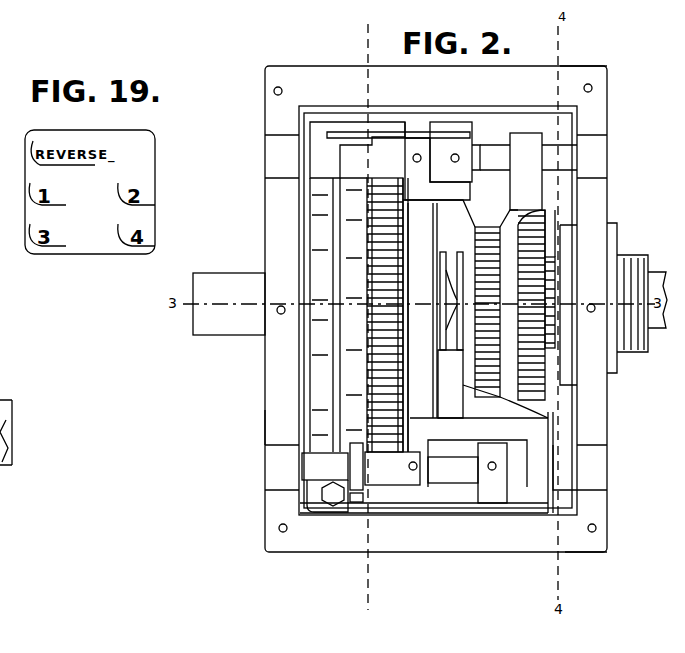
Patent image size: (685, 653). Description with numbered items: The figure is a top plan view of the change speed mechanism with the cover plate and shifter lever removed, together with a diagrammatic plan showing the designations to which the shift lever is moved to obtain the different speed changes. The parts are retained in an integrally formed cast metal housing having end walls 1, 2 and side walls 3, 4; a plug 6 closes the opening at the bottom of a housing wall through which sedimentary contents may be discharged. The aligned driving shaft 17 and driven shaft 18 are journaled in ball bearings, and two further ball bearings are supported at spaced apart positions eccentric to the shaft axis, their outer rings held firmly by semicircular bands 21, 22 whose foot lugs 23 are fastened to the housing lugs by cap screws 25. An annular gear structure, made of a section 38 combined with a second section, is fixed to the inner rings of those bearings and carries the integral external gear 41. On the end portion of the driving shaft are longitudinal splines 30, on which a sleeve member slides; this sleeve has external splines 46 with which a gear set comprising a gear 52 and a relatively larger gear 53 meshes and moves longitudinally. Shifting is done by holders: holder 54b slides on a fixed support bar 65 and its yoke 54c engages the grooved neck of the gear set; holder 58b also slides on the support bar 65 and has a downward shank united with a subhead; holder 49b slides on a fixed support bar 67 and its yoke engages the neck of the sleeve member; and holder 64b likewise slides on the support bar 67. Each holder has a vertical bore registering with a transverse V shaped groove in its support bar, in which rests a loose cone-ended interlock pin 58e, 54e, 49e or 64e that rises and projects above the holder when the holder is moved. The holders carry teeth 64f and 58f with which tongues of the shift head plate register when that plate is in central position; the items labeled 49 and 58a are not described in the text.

The end wall 1 is at (608, 431).
The end wall 2 is at (266, 419).
The side wall 3 is at (573, 553).
The side wall 4 is at (584, 65).
The plug 6 is at (369, 320).
The driving shaft 17 is at (9, 423).
The driven shaft 18 is at (220, 282).
The semicircular band 21 is at (317, 202).
The semicircular band 22 is at (410, 331).
The foot lug 23 is at (312, 495).
The cap screw 25 is at (333, 495).
The longitudinal splines 30 is at (563, 287).
The gear structure section 38 is at (350, 232).
The external gear 41 is at (388, 352).
The external splines 46 is at (550, 348).
The shifter fork 49 is at (460, 333).
The holder 49b is at (500, 430).
The interlock pin 49e is at (409, 468).
The gear 52 is at (478, 233).
The gear 53 is at (540, 233).
The holder 54b is at (527, 175).
The yoke 54c is at (507, 290).
The interlock pin 54e is at (413, 160).
The shift lever arm 58a is at (342, 133).
The holder 58b is at (378, 122).
The interlock pin 58e is at (460, 157).
The tooth 58f is at (417, 123).
The holder 64b is at (453, 503).
The interlock pin 64e is at (488, 467).
The tooth 64f is at (357, 503).
The fixed support bar 65 is at (557, 225).
The fixed support bar 67 is at (567, 475).